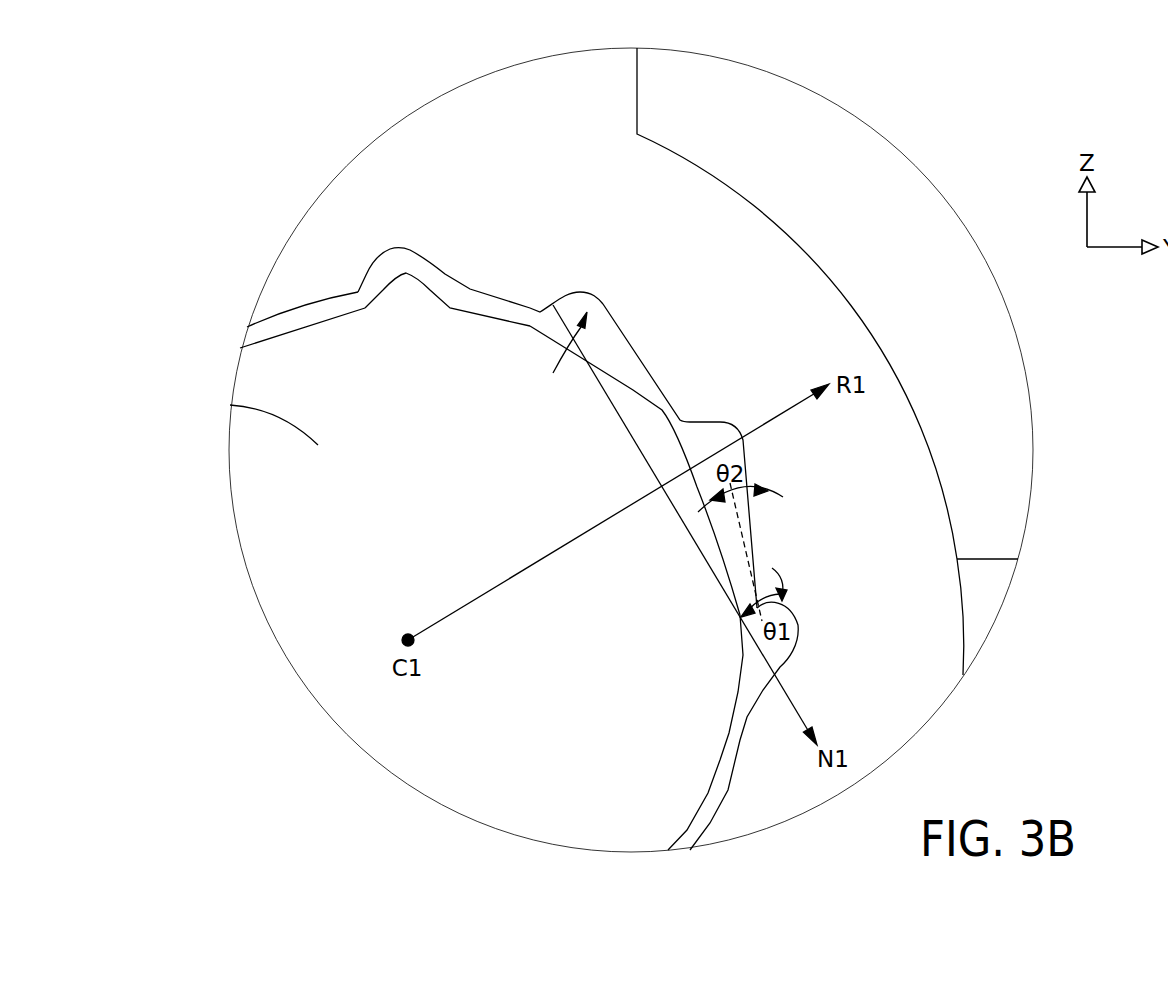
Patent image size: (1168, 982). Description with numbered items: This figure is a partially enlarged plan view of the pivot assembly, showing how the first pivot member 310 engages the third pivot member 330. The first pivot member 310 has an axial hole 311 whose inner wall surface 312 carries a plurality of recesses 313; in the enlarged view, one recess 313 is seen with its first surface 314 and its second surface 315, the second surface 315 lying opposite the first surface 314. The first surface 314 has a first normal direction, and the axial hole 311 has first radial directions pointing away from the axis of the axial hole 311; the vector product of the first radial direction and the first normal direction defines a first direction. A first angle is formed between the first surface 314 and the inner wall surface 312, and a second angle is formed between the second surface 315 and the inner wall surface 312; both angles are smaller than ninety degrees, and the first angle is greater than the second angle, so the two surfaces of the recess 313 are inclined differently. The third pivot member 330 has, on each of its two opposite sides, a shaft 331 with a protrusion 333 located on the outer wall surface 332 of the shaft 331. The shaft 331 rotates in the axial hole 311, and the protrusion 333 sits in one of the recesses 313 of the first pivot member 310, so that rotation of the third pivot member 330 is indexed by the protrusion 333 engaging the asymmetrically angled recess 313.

The first pivot member 310 is at (780, 294).
The axial hole 311 is at (305, 311).
The inner wall surface 312 is at (694, 812).
The recess 313 is at (558, 358).
The first surface 314 is at (555, 305).
The second surface 315 is at (625, 335).
The third pivot member 330 is at (983, 575).
The shaft 331 is at (230, 405).
The outer wall surface 332 is at (722, 794).
The protrusion 333 is at (410, 290).